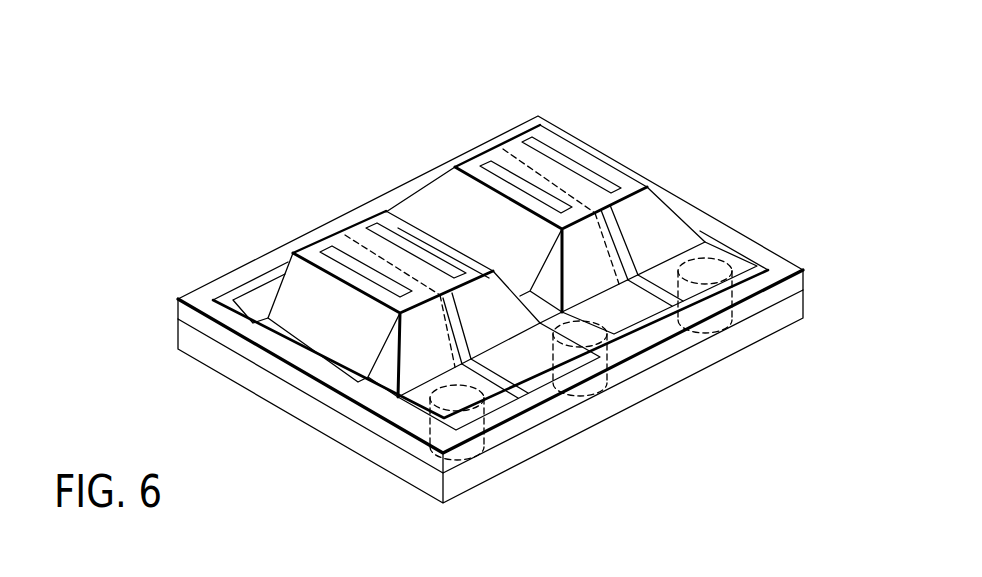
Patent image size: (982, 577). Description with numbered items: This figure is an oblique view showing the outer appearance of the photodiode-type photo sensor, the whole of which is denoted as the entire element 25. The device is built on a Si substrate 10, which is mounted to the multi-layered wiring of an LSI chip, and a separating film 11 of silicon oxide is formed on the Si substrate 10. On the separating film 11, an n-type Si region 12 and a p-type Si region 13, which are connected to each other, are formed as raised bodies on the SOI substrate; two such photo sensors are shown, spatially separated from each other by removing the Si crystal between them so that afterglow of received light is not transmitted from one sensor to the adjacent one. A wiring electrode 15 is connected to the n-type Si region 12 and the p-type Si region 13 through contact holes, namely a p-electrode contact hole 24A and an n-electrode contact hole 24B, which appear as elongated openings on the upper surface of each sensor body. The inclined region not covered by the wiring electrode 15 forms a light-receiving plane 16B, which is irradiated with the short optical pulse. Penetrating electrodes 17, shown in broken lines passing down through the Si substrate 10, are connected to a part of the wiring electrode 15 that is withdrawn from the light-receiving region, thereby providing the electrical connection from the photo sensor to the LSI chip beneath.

The Si substrate 10 is at (787, 320).
The separating film 11 is at (797, 282).
The n-type Si region 12 is at (313, 245).
The p-type Si region 13 is at (367, 217).
The wiring electrode 15 is at (640, 327).
The light-receiving plane 16B is at (322, 338).
The penetrating electrode 17 is at (737, 250).
The p-electrode contact hole 24A is at (386, 223).
The n-electrode contact hole 24B is at (320, 262).
The entire element 25 is at (514, 321).